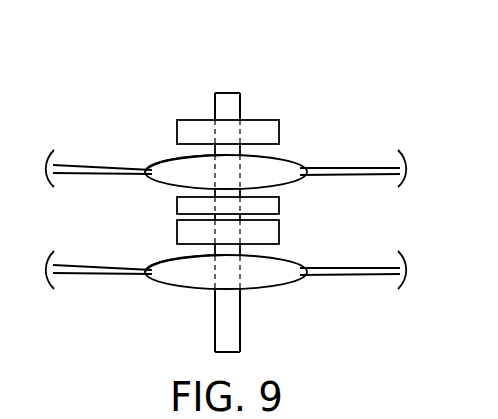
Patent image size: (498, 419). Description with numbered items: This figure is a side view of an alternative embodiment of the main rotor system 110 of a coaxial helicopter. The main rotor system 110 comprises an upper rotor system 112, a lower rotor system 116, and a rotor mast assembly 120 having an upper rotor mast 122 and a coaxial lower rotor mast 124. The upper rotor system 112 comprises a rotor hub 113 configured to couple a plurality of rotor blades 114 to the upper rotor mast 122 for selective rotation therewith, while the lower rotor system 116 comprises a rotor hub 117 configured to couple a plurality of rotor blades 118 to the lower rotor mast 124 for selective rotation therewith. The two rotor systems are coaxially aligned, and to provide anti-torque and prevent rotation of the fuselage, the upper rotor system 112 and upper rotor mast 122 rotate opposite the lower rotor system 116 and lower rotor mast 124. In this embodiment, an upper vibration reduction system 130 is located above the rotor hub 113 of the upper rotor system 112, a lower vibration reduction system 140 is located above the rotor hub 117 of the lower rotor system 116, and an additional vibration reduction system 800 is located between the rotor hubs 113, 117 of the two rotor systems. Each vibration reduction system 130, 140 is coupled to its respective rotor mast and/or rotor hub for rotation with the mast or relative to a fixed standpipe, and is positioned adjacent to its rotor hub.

The main rotor system 110 is at (128, 62).
The upper rotor system 112 is at (293, 156).
The rotor hub 113 is at (165, 161).
The rotor blades 114 is at (357, 167).
The lower rotor system 116 is at (277, 286).
The rotor hub 117 is at (166, 259).
The rotor blades 118 is at (92, 279).
The rotor mast assembly 120 is at (214, 340).
The upper rotor mast 122 is at (213, 297).
The lower rotor mast 124 is at (214, 100).
The upper vibration reduction system 130 is at (177, 127).
The lower vibration reduction system 140 is at (279, 232).
The vibration reduction system 800 is at (279, 205).